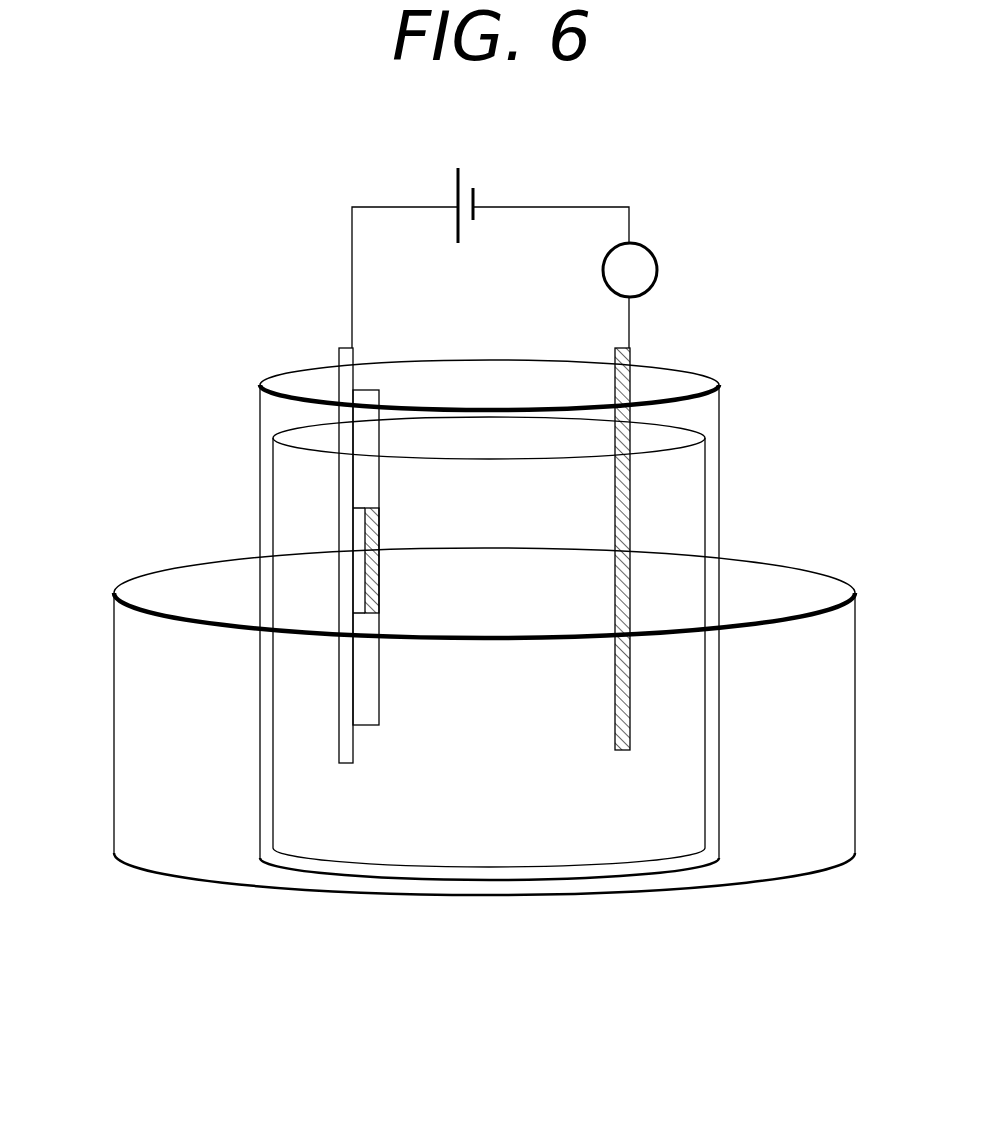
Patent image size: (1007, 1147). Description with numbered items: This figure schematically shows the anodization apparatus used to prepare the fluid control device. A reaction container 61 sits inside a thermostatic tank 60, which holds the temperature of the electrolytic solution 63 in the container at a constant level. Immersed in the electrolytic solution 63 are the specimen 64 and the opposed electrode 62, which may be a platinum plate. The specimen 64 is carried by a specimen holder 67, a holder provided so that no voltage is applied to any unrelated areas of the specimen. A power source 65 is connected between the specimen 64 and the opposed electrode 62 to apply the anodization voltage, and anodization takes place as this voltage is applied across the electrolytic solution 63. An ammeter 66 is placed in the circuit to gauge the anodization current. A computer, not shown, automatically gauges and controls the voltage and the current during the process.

The thermostatic tank 60 is at (164, 862).
The reaction container 61 is at (347, 870).
The opposed electrode 62 is at (632, 388).
The electrolytic solution 63 is at (653, 848).
The specimen 64 is at (377, 590).
The power source 65 is at (475, 196).
The ammeter 66 is at (657, 268).
The specimen holder 67 is at (347, 383).